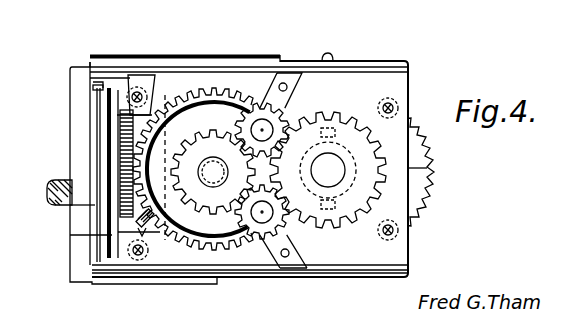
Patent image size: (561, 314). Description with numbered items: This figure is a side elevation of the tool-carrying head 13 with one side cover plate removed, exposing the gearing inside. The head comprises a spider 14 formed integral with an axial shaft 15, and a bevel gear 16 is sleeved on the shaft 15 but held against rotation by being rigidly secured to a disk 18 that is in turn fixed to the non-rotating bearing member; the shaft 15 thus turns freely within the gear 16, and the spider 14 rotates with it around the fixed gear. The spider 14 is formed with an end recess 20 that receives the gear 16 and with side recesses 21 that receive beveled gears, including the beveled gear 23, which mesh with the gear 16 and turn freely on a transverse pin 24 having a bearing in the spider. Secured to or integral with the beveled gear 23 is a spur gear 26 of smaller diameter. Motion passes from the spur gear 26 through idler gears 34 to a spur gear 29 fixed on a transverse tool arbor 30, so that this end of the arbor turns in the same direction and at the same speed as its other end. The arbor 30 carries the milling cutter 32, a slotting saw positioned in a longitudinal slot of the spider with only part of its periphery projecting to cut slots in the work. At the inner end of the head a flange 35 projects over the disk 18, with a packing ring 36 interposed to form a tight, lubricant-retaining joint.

The tool-carrying head 13 is at (239, 154).
The spider 14 is at (325, 56).
The axial shaft 15 is at (50, 171).
The bevel gear 16 is at (151, 115).
The disk 18 is at (90, 110).
The end recess 20 is at (131, 115).
The side recesses 21 is at (213, 92).
The beveled gear 23 is at (186, 243).
The pin 24 is at (210, 175).
The spur gear 26 is at (204, 132).
The spur gear 29 is at (380, 152).
The tool arbor 30 is at (328, 168).
The milling cutter 32 is at (428, 180).
The idler gears 34 is at (280, 127).
The flange 35 is at (100, 82).
The packing ring 36 is at (100, 132).